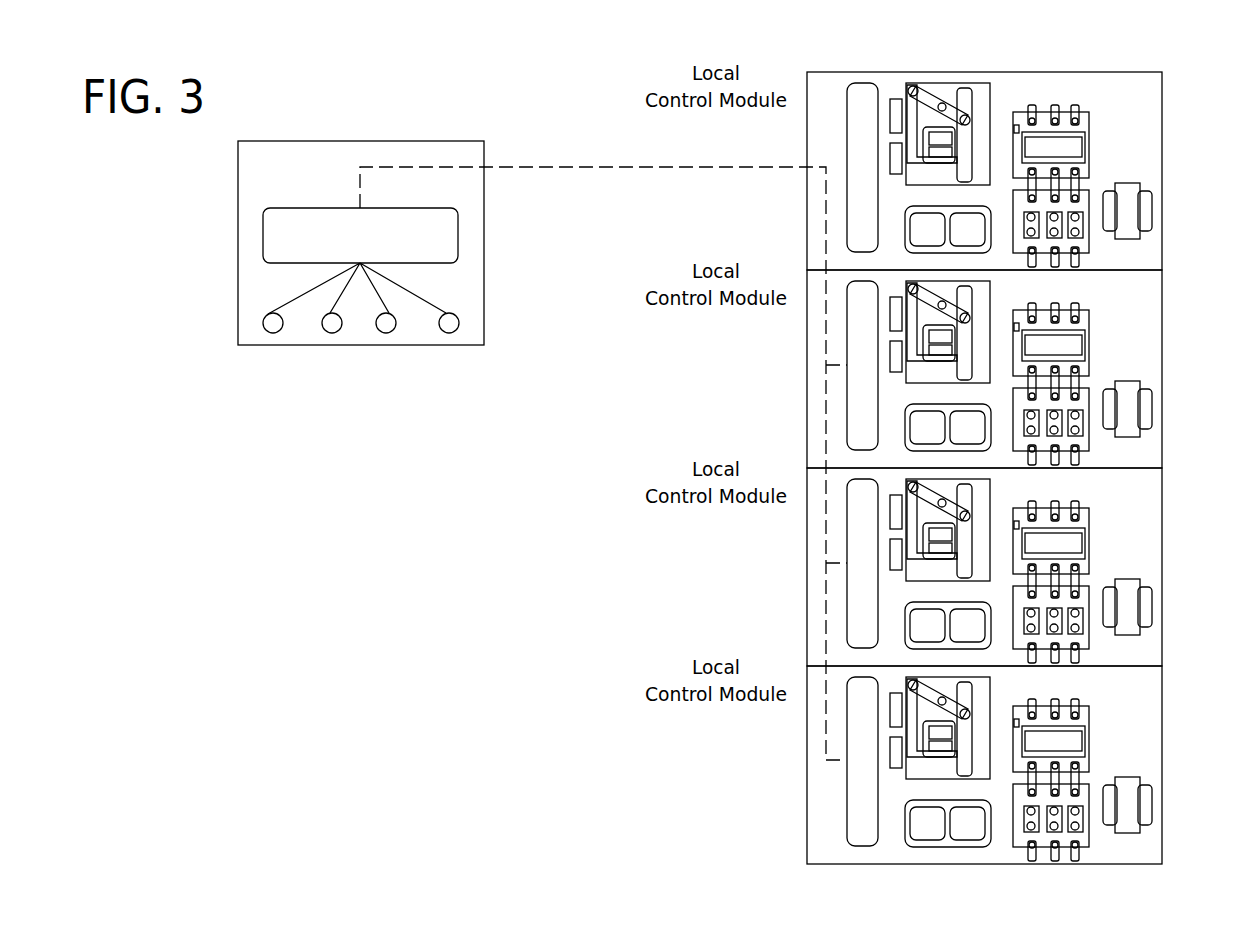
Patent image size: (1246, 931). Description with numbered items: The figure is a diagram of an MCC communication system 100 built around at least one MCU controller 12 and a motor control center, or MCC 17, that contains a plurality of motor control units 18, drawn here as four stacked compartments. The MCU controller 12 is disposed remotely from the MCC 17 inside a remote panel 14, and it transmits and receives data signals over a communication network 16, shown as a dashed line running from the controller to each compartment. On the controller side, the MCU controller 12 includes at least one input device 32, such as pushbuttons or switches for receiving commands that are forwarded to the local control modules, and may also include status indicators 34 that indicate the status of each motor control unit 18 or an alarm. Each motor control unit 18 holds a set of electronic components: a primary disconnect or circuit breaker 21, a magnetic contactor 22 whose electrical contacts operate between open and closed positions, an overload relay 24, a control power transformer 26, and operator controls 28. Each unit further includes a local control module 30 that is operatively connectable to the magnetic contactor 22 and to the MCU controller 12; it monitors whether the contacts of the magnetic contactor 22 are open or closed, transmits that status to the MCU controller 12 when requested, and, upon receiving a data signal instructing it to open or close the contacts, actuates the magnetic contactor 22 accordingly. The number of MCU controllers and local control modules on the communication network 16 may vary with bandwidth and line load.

The MCC communication system 100 is at (510, 115).
The MCC 17 is at (1162, 47).
The motor control unit 18 is at (1163, 63).
The remote panel 14 is at (348, 140).
The MCU controller 12 is at (263, 233).
The communication network 16 is at (580, 168).
The input device 32 is at (273, 333).
The status indicators 34 is at (386, 333).
The local control module 30 is at (847, 65).
The circuit breaker 21 is at (980, 427).
The operator controls 28 is at (879, 528).
The magnetic contactor 22 is at (1076, 450).
The overload relay 24 is at (1088, 175).
The control power transformer 26 is at (1158, 508).